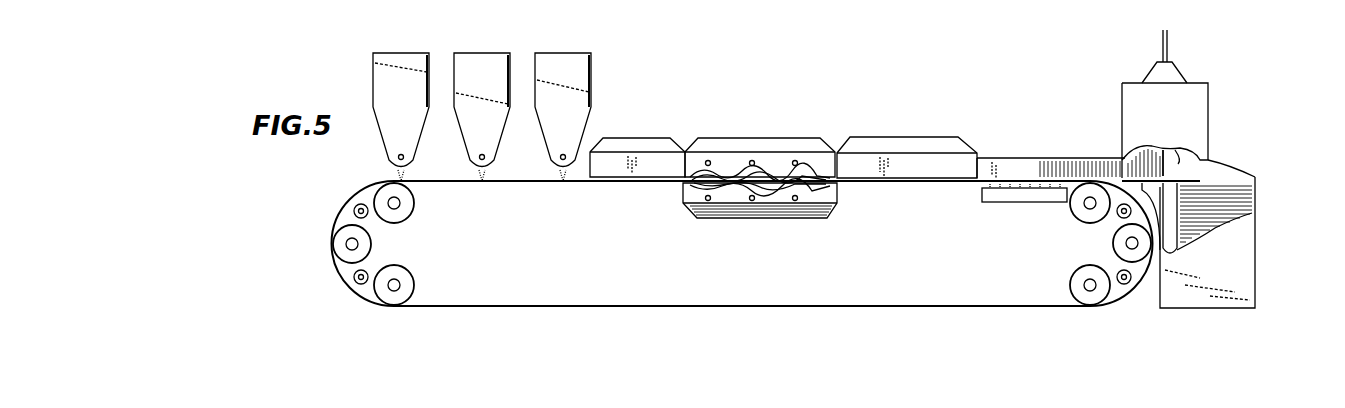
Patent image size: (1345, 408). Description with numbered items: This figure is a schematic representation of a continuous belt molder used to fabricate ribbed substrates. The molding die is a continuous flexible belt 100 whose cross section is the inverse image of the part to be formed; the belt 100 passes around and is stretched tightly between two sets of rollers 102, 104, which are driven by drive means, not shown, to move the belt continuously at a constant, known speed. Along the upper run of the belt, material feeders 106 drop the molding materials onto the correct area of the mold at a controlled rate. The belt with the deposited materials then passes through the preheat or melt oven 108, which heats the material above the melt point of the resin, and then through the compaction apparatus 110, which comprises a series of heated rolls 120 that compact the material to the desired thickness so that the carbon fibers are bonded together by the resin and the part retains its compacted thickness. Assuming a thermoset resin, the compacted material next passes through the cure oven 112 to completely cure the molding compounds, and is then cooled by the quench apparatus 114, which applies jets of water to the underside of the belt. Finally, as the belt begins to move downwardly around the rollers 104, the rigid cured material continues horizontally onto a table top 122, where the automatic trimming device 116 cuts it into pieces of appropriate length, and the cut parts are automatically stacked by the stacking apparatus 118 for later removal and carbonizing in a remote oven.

The continuous flexible belt 100 is at (675, 310).
The rollers 102 is at (386, 220).
The rollers 104 is at (1108, 220).
The material feeders 106 is at (450, 42).
The preheat or melt oven 108 is at (648, 147).
The compaction apparatus 110 is at (766, 136).
The cure oven 112 is at (900, 140).
The quench apparatus 114 is at (982, 192).
The trimming device 116 is at (1178, 150).
The stacking apparatus 118 is at (1260, 243).
The heated rolls 120 is at (760, 175).
The table top 122 is at (1123, 160).